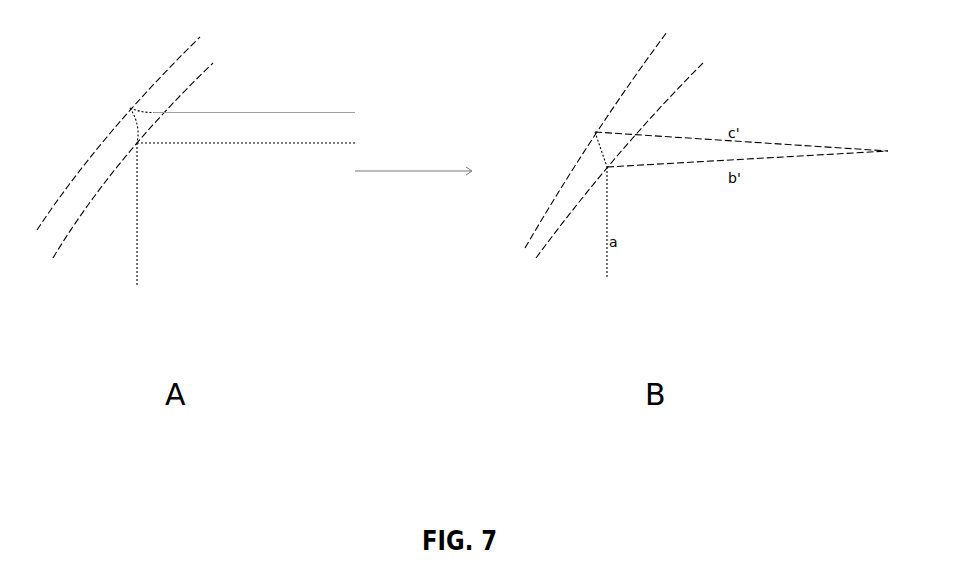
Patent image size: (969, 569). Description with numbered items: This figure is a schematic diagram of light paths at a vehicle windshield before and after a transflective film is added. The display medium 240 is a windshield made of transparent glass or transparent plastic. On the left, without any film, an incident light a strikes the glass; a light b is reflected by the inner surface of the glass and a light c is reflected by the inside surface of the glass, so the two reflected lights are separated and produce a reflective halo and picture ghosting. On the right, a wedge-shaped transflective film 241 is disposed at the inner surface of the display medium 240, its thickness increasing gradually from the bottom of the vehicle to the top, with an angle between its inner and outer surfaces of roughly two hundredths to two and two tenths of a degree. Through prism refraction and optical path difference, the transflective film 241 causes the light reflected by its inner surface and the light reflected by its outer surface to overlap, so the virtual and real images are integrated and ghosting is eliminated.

The display medium 240 is at (200, 62).
The transflective film 241 is at (678, 62).
The incident light a is at (144, 215).
The light reflected by an inner surface of the glass b is at (246, 153).
The light reflected by an inside surface of the glass c is at (242, 100).